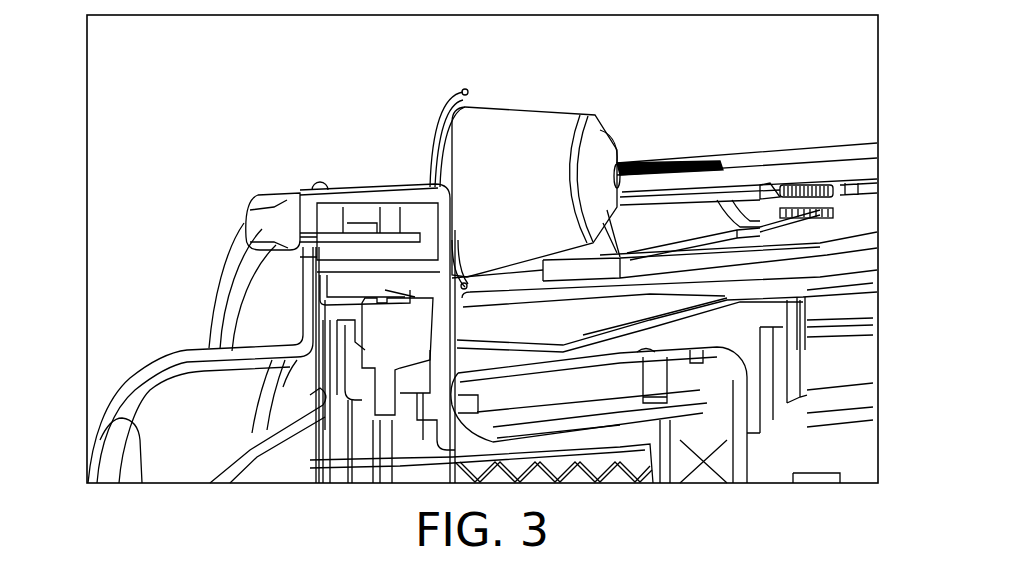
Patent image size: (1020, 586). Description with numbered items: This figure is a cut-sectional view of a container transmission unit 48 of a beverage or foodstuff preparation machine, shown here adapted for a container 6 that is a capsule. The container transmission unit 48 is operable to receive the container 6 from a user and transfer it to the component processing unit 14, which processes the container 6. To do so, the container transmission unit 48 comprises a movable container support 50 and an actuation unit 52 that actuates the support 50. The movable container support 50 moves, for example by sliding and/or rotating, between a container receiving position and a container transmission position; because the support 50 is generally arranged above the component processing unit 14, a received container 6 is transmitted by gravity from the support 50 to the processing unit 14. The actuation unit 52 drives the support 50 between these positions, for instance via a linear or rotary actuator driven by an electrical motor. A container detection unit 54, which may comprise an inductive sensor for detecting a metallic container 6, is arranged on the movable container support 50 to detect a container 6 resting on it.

The container 6 is at (522, 199).
The component processing unit 14 is at (75, 325).
The container transmission unit 48 is at (443, 80).
The movable container support 50 is at (680, 202).
The actuation unit 52 is at (872, 176).
The container detection unit 54 is at (807, 185).